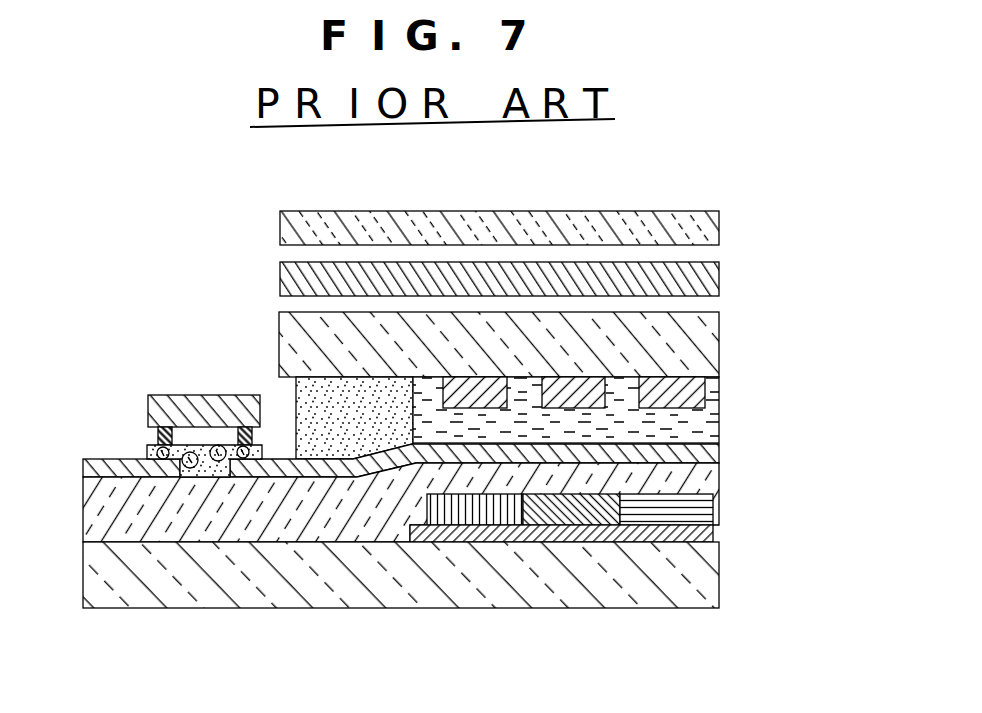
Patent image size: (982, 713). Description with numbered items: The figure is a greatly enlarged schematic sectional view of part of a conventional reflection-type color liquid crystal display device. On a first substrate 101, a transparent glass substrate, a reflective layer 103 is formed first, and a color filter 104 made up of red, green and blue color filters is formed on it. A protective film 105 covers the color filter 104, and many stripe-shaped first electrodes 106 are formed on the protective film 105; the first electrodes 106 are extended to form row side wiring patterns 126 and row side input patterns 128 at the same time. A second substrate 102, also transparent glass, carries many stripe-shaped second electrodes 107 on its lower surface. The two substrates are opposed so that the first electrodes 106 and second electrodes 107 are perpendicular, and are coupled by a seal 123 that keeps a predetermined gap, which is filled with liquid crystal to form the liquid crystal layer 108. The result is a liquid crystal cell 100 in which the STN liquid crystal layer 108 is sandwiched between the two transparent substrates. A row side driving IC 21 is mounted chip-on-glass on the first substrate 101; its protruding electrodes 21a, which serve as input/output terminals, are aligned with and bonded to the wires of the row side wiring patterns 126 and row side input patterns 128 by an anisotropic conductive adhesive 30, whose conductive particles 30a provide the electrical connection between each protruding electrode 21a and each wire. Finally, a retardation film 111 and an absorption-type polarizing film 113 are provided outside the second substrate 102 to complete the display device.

The liquid crystal cell 100 is at (462, 508).
The first substrate 101 is at (447, 589).
The second substrate 102 is at (708, 338).
The reflective layer 103 is at (713, 538).
The color filter 104 is at (703, 510).
The protective film 105 is at (703, 482).
The first electrodes 106 is at (707, 451).
The second electrodes 107 is at (703, 390).
The liquid crystal layer 108 is at (705, 435).
The retardation film 111 is at (712, 284).
The polarizing film 113 is at (708, 233).
The seal 123 is at (345, 437).
The row side wiring patterns 126 is at (283, 470).
The row side input patterns 128 is at (112, 458).
The row side driving IC 21 is at (197, 403).
The protruding electrodes 21a is at (158, 435).
The anisotropic conductive adhesive 30 is at (215, 464).
The conductive particles 30a is at (187, 468).